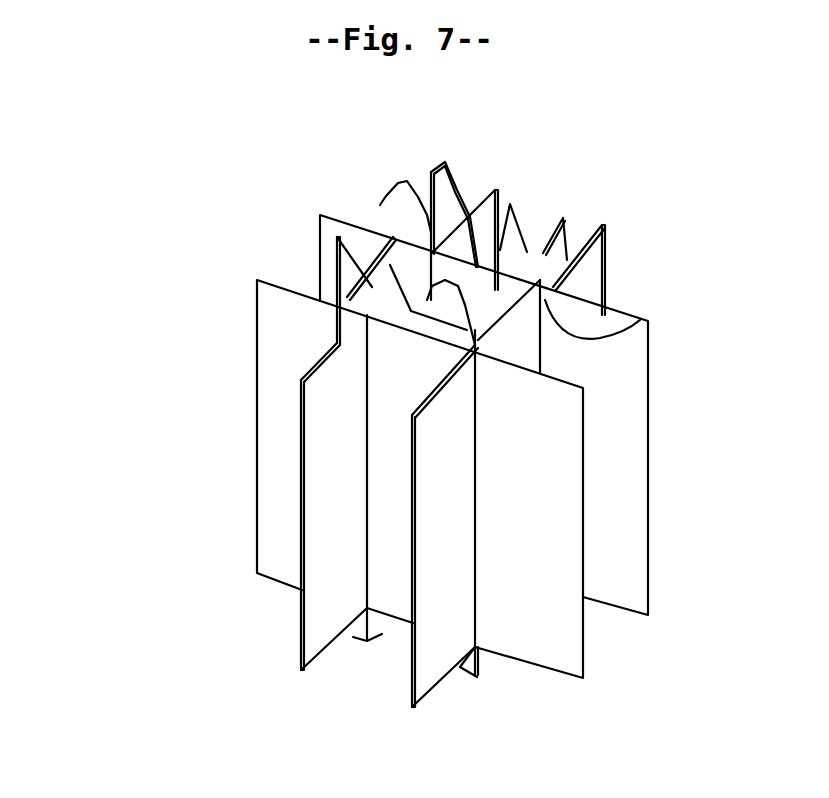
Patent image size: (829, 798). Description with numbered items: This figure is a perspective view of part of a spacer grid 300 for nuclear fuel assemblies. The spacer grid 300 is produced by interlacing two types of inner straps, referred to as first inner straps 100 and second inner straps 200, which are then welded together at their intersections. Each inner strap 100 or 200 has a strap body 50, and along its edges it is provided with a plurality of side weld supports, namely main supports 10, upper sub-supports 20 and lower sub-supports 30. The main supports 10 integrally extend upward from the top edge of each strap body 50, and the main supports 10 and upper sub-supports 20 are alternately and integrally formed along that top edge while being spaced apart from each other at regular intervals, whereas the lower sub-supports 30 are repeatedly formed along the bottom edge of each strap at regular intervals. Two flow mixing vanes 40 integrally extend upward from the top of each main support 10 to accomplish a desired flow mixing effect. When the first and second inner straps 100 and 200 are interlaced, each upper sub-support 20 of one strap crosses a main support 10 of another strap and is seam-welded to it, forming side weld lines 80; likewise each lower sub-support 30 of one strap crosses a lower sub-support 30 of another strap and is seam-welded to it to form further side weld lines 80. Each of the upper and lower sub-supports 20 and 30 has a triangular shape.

The spacer grid 300 is at (140, 187).
The first inner strap 100 is at (250, 276).
The second inner strap 200 is at (285, 370).
The strap body 50 is at (652, 442).
The main support 10 is at (390, 228).
The upper sub-support 20 is at (578, 272).
The lower sub-support 30 is at (500, 660).
The flow mixing vane 40 is at (447, 178).
The side weld line 80 is at (600, 337).